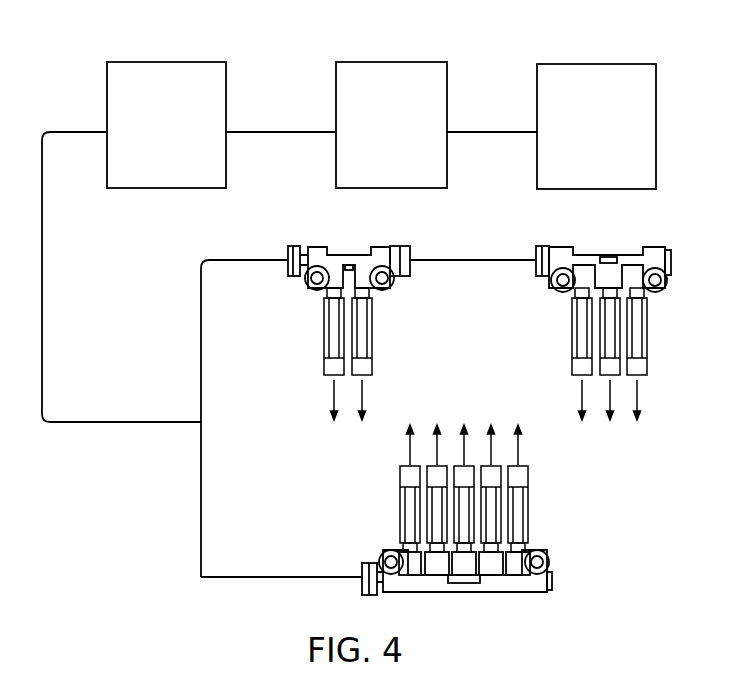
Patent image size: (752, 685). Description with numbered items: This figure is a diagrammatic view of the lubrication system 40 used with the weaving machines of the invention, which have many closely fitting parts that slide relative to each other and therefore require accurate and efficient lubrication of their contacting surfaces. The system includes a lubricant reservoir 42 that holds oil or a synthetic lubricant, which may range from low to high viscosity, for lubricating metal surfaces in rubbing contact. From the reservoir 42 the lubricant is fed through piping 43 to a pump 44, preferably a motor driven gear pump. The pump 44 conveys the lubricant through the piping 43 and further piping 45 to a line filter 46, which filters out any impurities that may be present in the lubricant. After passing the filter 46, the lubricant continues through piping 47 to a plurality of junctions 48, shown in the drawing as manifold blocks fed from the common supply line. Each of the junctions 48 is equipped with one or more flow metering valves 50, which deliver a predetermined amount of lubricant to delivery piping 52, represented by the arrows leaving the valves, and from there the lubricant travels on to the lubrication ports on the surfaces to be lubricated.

The lubrication system 40 is at (368, 34).
The lubricant reservoir 42 is at (633, 35).
The piping 43 is at (500, 100).
The pump 44 is at (395, 62).
The piping 45 is at (298, 105).
The line filter 46 is at (200, 38).
The piping 47 is at (258, 230).
The junctions 48 is at (360, 247).
The flow metering valves 50 is at (324, 330).
The delivery piping 52 is at (491, 445).